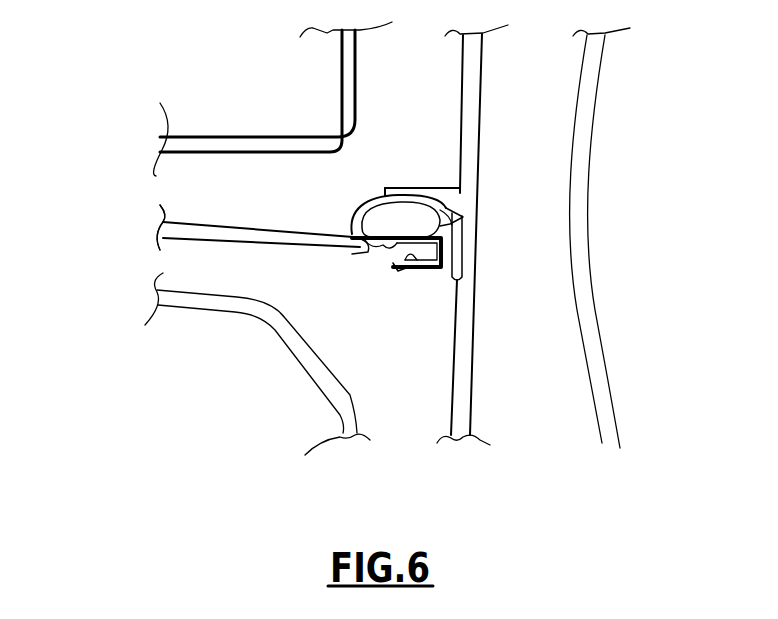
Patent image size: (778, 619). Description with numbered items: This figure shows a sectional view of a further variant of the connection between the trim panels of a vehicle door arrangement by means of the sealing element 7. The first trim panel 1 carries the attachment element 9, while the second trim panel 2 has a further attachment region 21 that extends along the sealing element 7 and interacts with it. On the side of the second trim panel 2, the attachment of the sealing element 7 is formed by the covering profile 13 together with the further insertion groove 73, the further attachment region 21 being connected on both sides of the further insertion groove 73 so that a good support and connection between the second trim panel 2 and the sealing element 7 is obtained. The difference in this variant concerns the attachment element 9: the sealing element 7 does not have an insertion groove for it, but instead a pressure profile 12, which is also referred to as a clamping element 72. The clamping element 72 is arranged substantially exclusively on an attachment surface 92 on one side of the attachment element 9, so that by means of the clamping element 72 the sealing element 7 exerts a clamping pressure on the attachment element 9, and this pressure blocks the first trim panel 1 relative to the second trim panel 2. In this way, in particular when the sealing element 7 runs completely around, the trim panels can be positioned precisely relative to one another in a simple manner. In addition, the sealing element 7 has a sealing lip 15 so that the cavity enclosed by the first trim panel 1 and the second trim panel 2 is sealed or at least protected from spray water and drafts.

The first trim panel 1 is at (473, 110).
The second trim panel 2 is at (170, 235).
The sealing element 7 is at (417, 290).
The attachment element 9 is at (434, 200).
The pressure profile 12 is at (352, 216).
The covering profile 13 is at (428, 277).
The sealing lip 15 is at (487, 203).
The further attachment region 21 is at (360, 245).
The clamping element 72 is at (346, 192).
The further insertion groove 73 is at (373, 291).
The attachment surface 92 is at (455, 201).